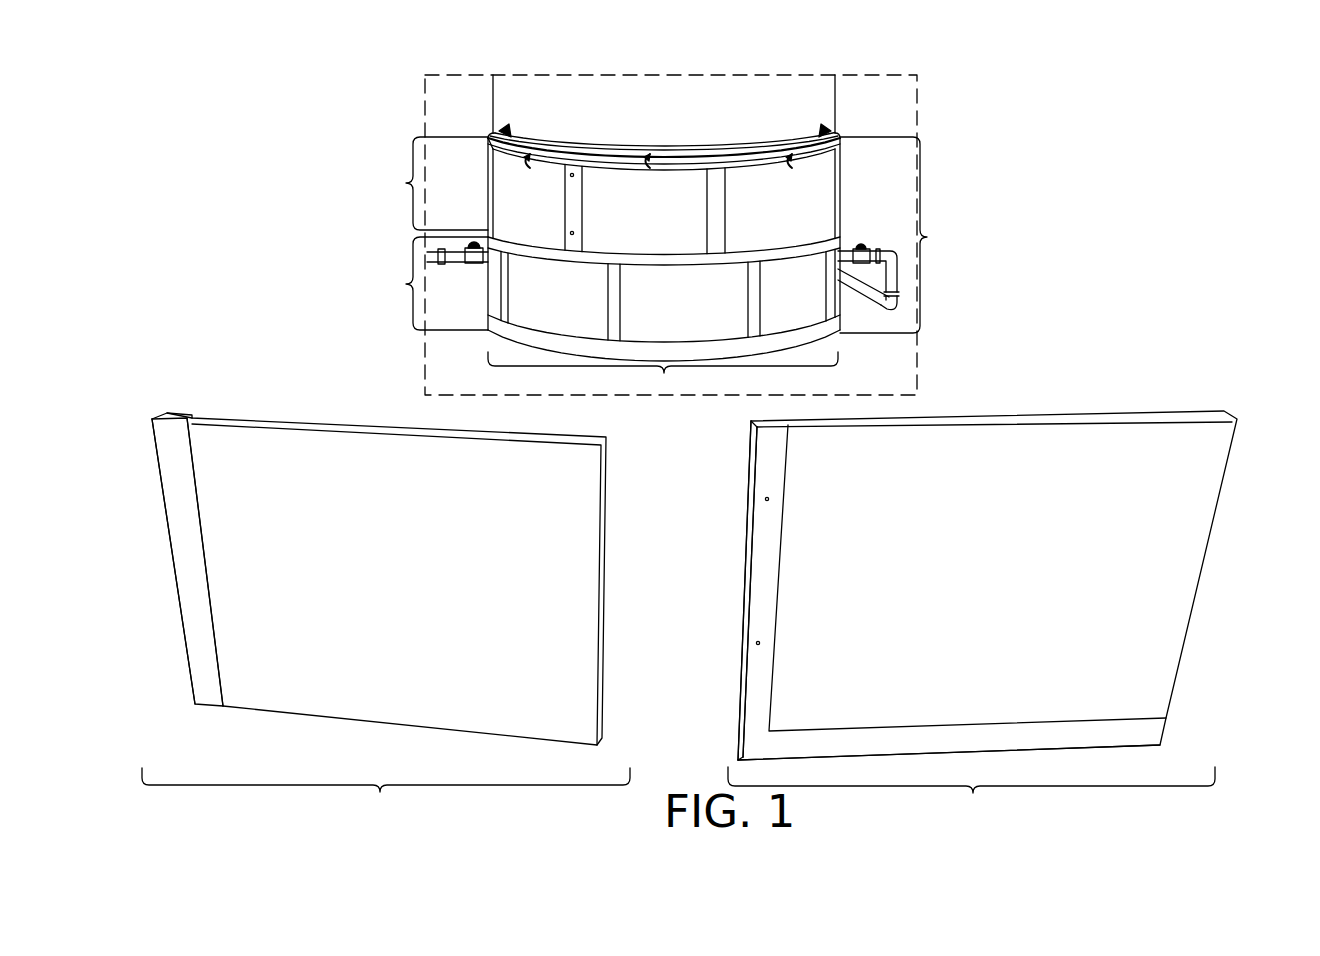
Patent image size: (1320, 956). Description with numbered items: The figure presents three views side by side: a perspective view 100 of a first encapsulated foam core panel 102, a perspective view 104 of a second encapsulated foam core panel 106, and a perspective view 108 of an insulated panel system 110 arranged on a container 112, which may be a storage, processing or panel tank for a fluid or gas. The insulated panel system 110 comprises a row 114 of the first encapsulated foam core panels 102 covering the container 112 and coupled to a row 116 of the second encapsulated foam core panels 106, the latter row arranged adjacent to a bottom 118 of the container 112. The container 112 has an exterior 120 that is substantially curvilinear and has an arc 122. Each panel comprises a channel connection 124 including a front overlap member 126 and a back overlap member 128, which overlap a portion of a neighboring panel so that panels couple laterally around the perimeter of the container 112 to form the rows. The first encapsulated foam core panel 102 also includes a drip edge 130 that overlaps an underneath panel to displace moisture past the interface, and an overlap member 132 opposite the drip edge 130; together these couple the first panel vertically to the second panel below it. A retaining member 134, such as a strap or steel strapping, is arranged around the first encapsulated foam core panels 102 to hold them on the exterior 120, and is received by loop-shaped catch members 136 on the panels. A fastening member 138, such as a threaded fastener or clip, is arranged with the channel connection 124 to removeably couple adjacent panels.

The perspective view of first encapsulated foam core panel 100 is at (982, 615).
The first encapsulated foam core panel 102 is at (539, 203).
The perspective view of second encapsulated foam core panel 104 is at (386, 616).
The second encapsulated foam core panel 106 is at (566, 305).
The perspective view of insulated panel system 108 is at (664, 268).
The insulated panel system 110 is at (903, 235).
The container 112 is at (835, 91).
The row of first encapsulated foam core panels 114 is at (430, 183).
The row of second encapsulated foam core panels 116 is at (430, 283).
The bottom 118 is at (486, 345).
The exterior 120 is at (686, 118).
The arc 122 is at (650, 145).
The channel connection 124 is at (747, 444).
The front overlap member 126 is at (752, 508).
The back overlap member 128 is at (747, 486).
The drip edge 130 is at (791, 760).
The overlap member 132 is at (735, 756).
The retaining member 134 is at (492, 138).
The catch member 136 is at (527, 165).
The fastening member 138 is at (573, 176).